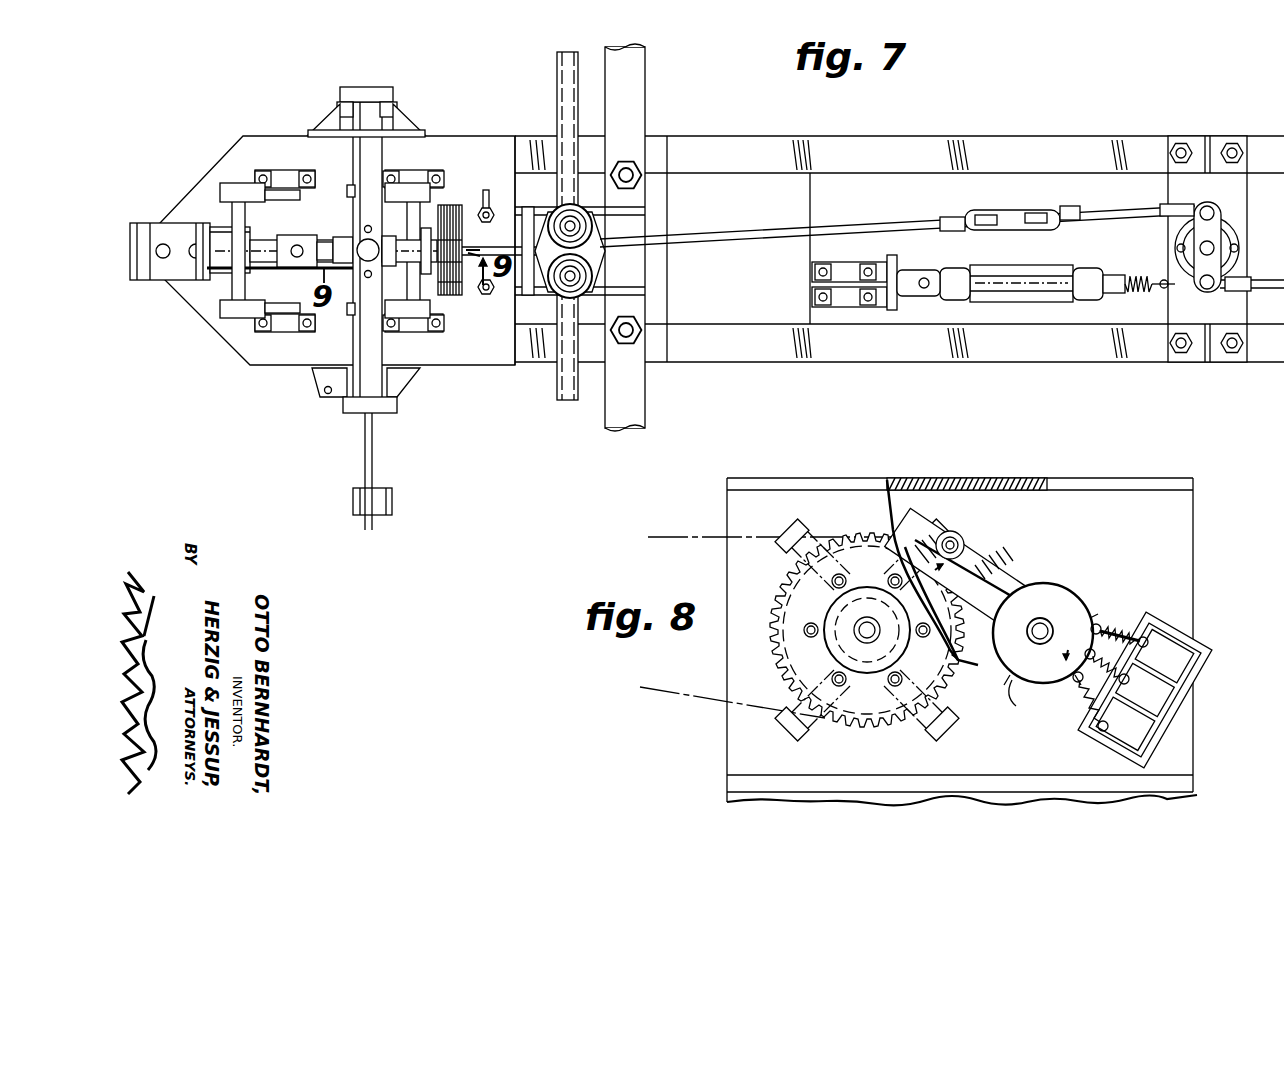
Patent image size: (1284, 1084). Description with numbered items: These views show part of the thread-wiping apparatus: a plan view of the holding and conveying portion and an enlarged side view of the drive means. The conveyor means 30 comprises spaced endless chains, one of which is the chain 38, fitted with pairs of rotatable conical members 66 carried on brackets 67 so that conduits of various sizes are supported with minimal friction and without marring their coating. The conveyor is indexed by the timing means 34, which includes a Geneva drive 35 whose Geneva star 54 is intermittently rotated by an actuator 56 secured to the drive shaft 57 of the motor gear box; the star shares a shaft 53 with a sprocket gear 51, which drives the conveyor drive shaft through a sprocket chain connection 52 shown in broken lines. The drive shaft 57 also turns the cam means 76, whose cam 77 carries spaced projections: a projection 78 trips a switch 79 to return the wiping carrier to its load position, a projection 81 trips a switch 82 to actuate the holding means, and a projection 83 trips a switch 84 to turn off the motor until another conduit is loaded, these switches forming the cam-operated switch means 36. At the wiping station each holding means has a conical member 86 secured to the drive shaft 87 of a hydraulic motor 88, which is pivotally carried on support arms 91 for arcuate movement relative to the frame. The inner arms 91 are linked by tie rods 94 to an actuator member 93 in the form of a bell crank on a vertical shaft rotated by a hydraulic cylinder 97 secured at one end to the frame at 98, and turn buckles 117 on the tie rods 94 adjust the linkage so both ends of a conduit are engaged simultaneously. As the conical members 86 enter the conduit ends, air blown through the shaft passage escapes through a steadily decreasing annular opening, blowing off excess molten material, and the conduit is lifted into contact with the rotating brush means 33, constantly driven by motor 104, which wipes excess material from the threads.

In FIG. 7, the conveyor means 30 is at (550, 68).
In FIG. 7, the rotating brush means 33 is at (456, 206).
In FIG. 8, the timing means 34 is at (1082, 479).
In FIG. 8, the Geneva drive 35 is at (922, 538).
In FIG. 8, the cam-operated switch means 36 is at (1198, 628).
In FIG. 7, the endless chain 38 is at (560, 390).
In FIG. 8, the sprocket gear 51 is at (850, 723).
In FIG. 8, the sprocket chain connection 52 is at (700, 536).
In FIG. 8, the shaft 53 is at (870, 624).
In FIG. 8, the Geneva star 54 is at (960, 566).
In FIG. 8, the actuator 56 is at (963, 548).
In FIG. 8, the drive shaft 57 is at (1030, 650).
In FIG. 7, the conical members 66 is at (551, 218).
In FIG. 7, the brackets 67 is at (598, 256).
In FIG. 8, the cam means 76 is at (1084, 586).
In FIG. 8, the cam 77 is at (1060, 586).
In FIG. 8, the projection 78 is at (1001, 690).
In FIG. 8, the switch 79 is at (1086, 708).
In FIG. 8, the projection 81 is at (1090, 636).
In FIG. 8, the switch 82 is at (1172, 692).
In FIG. 8, the projection 83 is at (1018, 680).
In FIG. 8, the switch 84 is at (1116, 628).
In FIG. 7, the conical member 86 is at (470, 246).
In FIG. 7, the drive shaft 87 is at (428, 266).
In FIG. 7, the hydraulic motor 88 is at (195, 274).
In FIG. 7, the support arms 91 is at (244, 185).
In FIG. 7, the actuator member 93 is at (1185, 205).
In FIG. 7, the tie rods 94 is at (752, 234).
In FIG. 7, the hydraulic cylinder 97 is at (1044, 273).
In FIG. 7, the cylinder attachment 98 is at (888, 258).
In FIG. 7, the motor 104 is at (326, 242).
In FIG. 7, the turn buckles 117 is at (1022, 212).